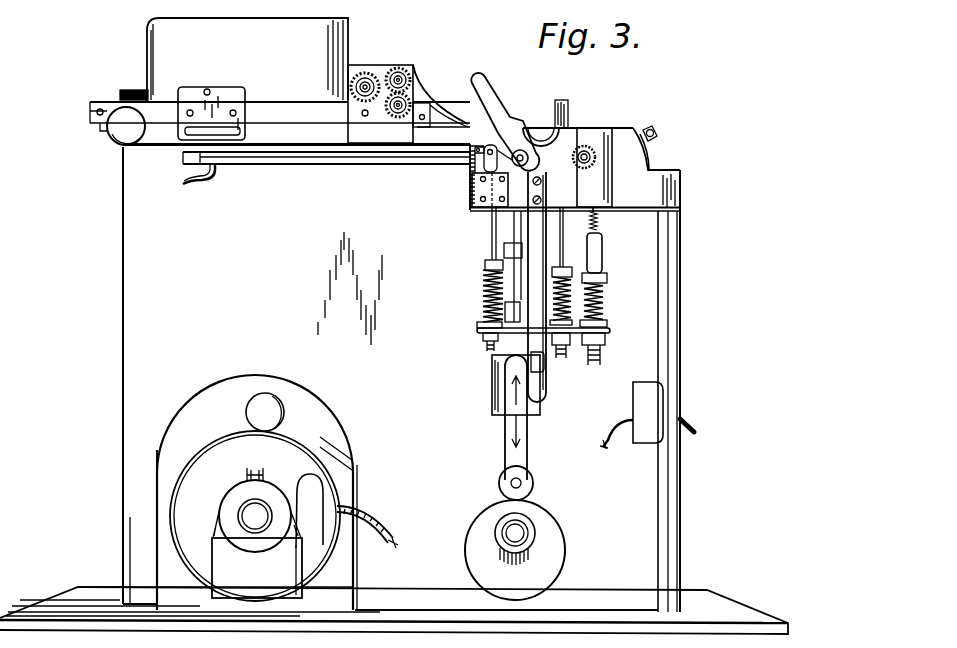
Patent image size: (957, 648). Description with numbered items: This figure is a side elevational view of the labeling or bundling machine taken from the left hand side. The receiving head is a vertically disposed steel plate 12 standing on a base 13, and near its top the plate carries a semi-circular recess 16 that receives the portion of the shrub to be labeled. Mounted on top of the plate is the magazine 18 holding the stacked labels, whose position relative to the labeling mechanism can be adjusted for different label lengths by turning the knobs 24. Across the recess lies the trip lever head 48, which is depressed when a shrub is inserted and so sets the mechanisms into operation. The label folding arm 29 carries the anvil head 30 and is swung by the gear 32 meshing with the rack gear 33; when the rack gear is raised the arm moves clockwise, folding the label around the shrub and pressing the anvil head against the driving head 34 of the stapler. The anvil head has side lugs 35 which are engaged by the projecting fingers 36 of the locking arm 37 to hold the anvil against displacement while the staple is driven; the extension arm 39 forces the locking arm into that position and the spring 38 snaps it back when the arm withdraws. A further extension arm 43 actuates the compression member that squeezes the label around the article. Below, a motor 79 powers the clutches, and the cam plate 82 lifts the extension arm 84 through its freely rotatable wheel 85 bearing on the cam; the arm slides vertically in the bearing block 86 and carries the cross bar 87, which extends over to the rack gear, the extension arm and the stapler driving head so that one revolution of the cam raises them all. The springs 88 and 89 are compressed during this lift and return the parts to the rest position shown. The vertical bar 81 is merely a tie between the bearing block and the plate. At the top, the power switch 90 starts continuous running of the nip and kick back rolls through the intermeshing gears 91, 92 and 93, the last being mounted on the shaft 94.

The plate 12 is at (152, 265).
The base 13 is at (708, 603).
The semi-circular recess 16 is at (552, 135).
The magazine 18 is at (147, 52).
The knobs 24 is at (112, 140).
The label folding arm 29 is at (652, 158).
The anvil head 30 is at (653, 130).
The gear 32 is at (577, 167).
The rack gear 33 is at (600, 224).
The driving head 34 is at (485, 259).
The side lugs 35 is at (656, 133).
The projecting fingers 36 is at (509, 126).
The locking arm 37 is at (487, 83).
The spring 38 is at (472, 190).
The extension arm 39 is at (489, 230).
The extension arm 43 is at (562, 228).
The trip lever head 48 is at (545, 128).
The motor 79 is at (235, 436).
The vertical bar 81 is at (532, 343).
The cam plate 82 is at (555, 547).
The extension arm 84 is at (505, 453).
The wheel 85 is at (532, 478).
The bearing block 86 is at (497, 370).
The cross bar 87 is at (574, 346).
The spring 88 is at (484, 303).
The spring 89 is at (604, 300).
The power switch 90 is at (696, 426).
The gear 91 is at (365, 82).
The gear 92 is at (398, 76).
The gear 93 is at (394, 118).
The shaft 94 is at (416, 97).